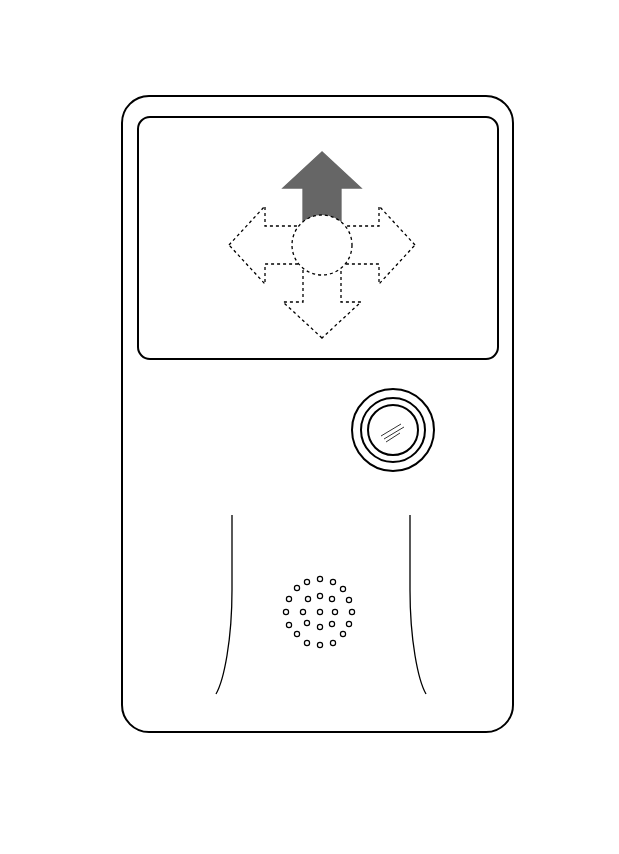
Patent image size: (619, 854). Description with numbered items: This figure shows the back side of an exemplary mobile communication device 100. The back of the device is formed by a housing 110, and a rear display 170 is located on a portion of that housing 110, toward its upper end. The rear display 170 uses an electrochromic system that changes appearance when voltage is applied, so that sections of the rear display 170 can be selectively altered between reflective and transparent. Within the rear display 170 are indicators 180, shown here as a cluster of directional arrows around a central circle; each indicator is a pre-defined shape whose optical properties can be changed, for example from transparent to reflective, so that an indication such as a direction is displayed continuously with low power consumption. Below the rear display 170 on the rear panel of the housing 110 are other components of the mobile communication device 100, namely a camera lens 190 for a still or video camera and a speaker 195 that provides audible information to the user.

The mobile communication device 100 is at (228, 64).
The housing 110 is at (123, 138).
The rear display 170 is at (480, 344).
The indicators 180 is at (382, 162).
The camera lens 190 is at (435, 420).
The speaker 195 is at (385, 592).